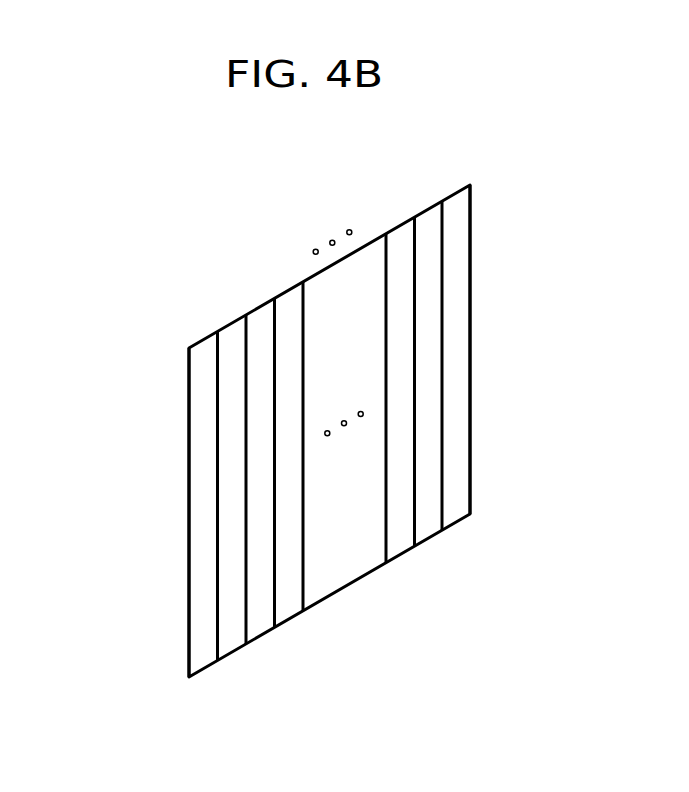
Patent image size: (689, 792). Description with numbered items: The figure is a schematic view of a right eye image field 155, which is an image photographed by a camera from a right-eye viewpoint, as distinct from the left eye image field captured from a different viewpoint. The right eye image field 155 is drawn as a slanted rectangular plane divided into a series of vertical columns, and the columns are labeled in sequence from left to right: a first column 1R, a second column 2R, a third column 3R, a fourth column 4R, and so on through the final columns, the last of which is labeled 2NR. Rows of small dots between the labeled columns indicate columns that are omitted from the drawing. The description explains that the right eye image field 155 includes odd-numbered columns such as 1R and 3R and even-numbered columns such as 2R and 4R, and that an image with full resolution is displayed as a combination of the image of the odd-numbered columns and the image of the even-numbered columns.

The right eye image field 155 is at (279, 410).
The first right eye column 1R is at (189, 494).
The second right eye column 2R is at (222, 476).
The third right eye column 3R is at (254, 459).
The fourth right eye column 4R is at (288, 442).
The 2Nth right lens region 2NR is at (437, 337).